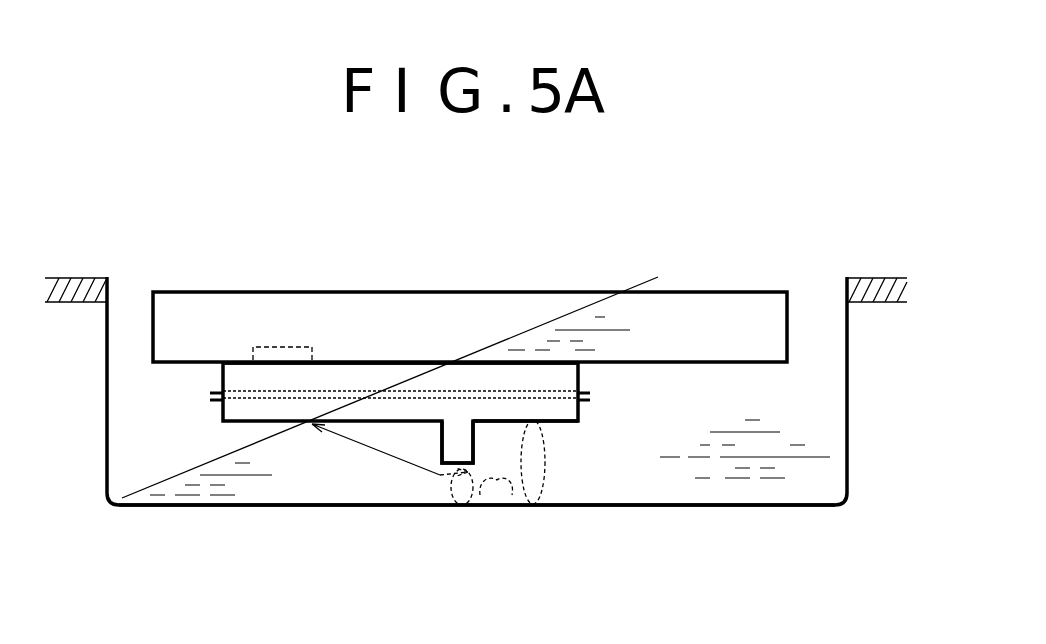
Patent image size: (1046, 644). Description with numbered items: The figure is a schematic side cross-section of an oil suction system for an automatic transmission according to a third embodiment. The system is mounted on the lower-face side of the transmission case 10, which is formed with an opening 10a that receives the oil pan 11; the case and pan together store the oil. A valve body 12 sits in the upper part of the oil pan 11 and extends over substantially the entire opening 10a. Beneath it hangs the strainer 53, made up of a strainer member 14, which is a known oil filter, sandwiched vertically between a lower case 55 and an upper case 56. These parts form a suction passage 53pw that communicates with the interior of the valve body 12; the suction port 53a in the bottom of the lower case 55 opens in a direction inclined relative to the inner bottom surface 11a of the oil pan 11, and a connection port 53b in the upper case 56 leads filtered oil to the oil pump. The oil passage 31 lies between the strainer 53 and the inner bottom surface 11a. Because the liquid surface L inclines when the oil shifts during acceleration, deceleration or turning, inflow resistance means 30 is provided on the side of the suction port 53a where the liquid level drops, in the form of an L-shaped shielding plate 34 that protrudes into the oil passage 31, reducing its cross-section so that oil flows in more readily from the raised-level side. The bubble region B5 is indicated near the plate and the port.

The transmission case 10 is at (77, 278).
The opening 10a is at (847, 292).
The oil pan 11 is at (848, 446).
The inner bottom surface 11a is at (268, 504).
The valve body 12 is at (452, 292).
The strainer member 14 is at (427, 392).
The inflow resistance means 30 is at (418, 441).
The oil passage 31 is at (507, 497).
The shielding plate 34 is at (442, 447).
The strainer 53 is at (589, 377).
The suction port 53a is at (496, 422).
The connection port 53b is at (280, 347).
The suction passage 53pw is at (363, 337).
The lower case 55 is at (223, 413).
The upper case 56 is at (223, 373).
The liquid surface L is at (162, 481).
The bubble region B5 is at (503, 464).